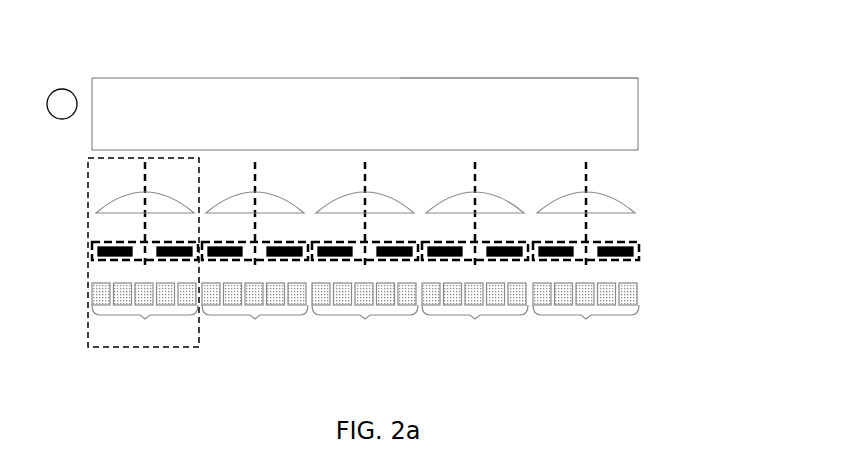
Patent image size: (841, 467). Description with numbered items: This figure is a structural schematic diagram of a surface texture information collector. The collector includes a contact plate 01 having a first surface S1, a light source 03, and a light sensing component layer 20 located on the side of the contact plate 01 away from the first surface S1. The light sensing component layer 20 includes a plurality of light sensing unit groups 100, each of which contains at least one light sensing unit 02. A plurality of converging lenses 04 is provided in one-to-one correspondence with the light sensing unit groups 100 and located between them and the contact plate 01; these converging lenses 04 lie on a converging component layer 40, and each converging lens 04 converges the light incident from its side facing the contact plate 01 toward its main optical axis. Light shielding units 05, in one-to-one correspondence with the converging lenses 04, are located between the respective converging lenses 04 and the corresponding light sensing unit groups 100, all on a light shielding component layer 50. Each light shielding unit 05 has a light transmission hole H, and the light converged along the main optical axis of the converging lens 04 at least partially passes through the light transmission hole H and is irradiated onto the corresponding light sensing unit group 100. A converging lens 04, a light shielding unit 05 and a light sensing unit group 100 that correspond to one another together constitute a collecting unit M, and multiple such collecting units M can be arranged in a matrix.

The contact plate 01 is at (130, 78).
The first surface S1 is at (497, 78).
The light source 03 is at (60, 100).
The converging lens 04 is at (110, 200).
The converging component layer 40 is at (395, 194).
The light shielding unit 05 is at (90, 250).
The light shielding component layer 50 is at (388, 234).
The light transmission hole H is at (594, 250).
The light sensing unit 02 is at (100, 295).
The light sensing component layer 20 is at (395, 286).
The light sensing unit group 100 is at (365, 322).
The collecting unit M is at (140, 347).